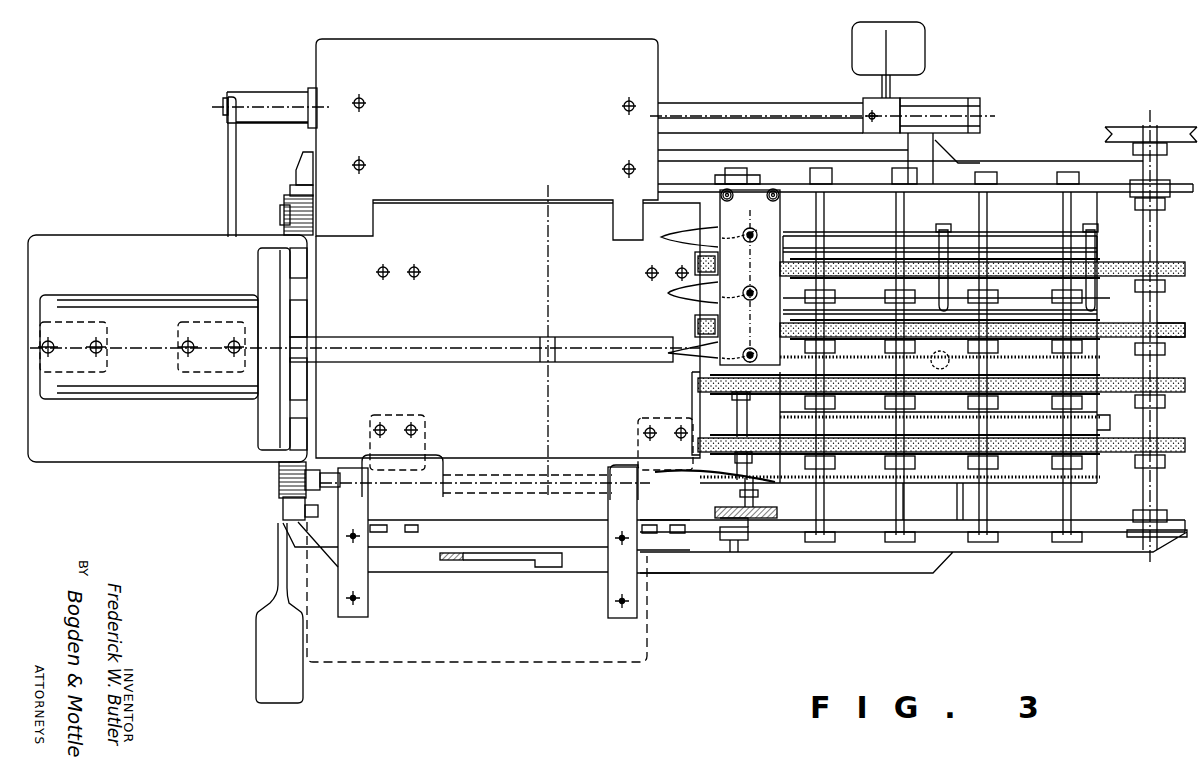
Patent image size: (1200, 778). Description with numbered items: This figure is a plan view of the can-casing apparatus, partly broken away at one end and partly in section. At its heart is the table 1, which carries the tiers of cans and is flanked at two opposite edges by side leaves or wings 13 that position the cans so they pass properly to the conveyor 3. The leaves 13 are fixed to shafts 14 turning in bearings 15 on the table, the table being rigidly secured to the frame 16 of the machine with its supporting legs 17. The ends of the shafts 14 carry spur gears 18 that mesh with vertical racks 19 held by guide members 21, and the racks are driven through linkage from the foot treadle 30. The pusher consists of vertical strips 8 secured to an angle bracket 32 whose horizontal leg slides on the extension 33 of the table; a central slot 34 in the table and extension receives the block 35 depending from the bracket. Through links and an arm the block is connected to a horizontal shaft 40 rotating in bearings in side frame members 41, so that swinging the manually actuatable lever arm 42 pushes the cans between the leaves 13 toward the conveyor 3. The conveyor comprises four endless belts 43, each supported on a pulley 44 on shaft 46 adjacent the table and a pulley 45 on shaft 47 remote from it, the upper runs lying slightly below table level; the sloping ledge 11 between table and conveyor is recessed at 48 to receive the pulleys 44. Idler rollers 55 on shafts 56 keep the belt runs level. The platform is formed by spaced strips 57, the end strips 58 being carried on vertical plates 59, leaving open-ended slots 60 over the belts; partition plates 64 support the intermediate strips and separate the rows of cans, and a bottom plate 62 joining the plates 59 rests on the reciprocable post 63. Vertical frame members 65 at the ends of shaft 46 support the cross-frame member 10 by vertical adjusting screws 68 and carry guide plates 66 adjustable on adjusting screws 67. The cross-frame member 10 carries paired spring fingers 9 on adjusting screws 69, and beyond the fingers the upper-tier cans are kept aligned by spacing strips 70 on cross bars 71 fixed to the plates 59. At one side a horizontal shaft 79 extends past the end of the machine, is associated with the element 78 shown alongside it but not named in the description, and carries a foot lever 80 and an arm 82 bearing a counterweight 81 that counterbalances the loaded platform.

The table 1 is at (492, 214).
The conveyor 3 is at (1169, 316).
The pusher strips 8 is at (307, 320).
The spring fingers 9 is at (676, 288).
The cross-frame member 10 is at (782, 205).
The ledge 11 is at (715, 535).
The side leaves or wings 13 is at (316, 57).
The shafts 14 is at (282, 214).
The bearings 15 is at (420, 472).
The frame 16 is at (1022, 175).
The supporting legs 17 is at (950, 196).
The spur gear 18 is at (314, 215).
The vertical racks 19 is at (289, 190).
The guide members 21 is at (298, 176).
The foot treadle 30 is at (258, 628).
The angle bracket 32 is at (286, 286).
The extension 33 is at (120, 462).
The central slot 34 is at (140, 330).
The block 35 is at (70, 375).
The horizontal shaft 40 is at (548, 572).
The side frame members 41 is at (733, 135).
The manually actuatable lever arm 42 is at (468, 563).
The endless belts 43 is at (1108, 262).
The pulley 44 is at (757, 398).
The pulley 45 is at (1170, 340).
The shaft 46 is at (730, 545).
The shaft 47 is at (1158, 240).
The recesses 48 is at (714, 396).
The idler rollers 55 is at (848, 366).
The shafts 56 is at (826, 497).
The strips 57 is at (1032, 288).
The end strip 58 is at (873, 240).
The vertical plates 59 is at (846, 232).
The slots 60 is at (1016, 248).
The bottom plate 62 is at (1098, 422).
The post or standard 63 is at (951, 366).
The partition plate 64 is at (1012, 415).
The vertical frame members 65 is at (752, 195).
The guide plates 66 is at (670, 235).
The adjusting screws 67 is at (760, 500).
The vertical adjusting screws 68 is at (724, 190).
The vertical adjusting screw 69 is at (755, 242).
The spacing strips 70 is at (1105, 300).
The cross bars 71 is at (938, 232).
The cylinder 78 is at (908, 152).
The horizontal shaft 79 is at (687, 106).
The foot lever 80 is at (228, 152).
The counterweight 81 is at (852, 45).
The arm 82 is at (882, 87).